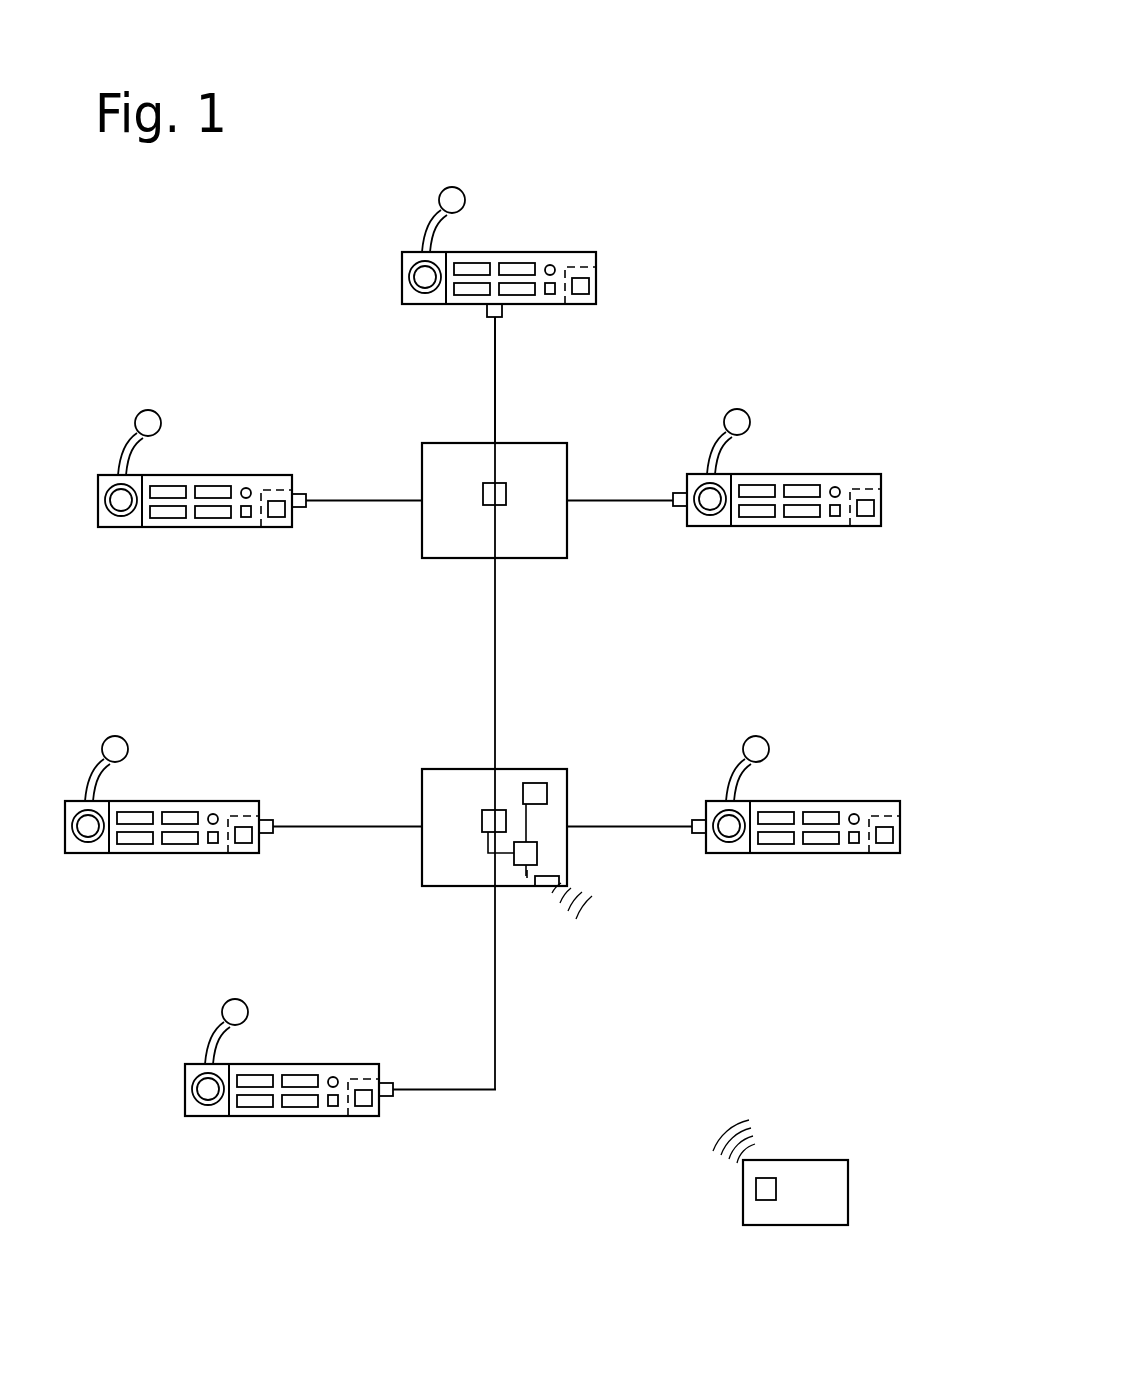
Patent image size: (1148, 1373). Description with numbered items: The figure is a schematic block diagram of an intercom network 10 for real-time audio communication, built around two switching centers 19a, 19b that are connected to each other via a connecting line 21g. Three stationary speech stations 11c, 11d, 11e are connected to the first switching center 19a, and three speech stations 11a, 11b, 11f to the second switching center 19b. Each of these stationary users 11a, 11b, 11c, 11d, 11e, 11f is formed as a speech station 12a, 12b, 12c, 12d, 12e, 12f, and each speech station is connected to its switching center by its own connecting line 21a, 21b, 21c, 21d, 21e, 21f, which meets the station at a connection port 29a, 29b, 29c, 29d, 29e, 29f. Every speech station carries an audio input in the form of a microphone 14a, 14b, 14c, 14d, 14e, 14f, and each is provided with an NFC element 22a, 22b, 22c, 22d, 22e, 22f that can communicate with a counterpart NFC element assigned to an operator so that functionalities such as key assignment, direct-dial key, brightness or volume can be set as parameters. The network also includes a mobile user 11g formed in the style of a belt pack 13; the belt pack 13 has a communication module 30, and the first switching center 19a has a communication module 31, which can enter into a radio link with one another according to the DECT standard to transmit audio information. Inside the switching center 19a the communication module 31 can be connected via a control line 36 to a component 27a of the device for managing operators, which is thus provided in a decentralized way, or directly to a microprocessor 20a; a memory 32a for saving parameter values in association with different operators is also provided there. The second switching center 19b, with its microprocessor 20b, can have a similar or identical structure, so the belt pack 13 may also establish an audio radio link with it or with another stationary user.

The intercom network 10 is at (799, 72).
The user 11a is at (496, 258).
The user 11b is at (820, 477).
The user 11c is at (815, 804).
The user 11d is at (277, 1077).
The user 11e is at (160, 804).
The user 11f is at (193, 478).
The mobile user 11g is at (790, 1208).
The speech station 12a is at (521, 251).
The speech station 12b is at (813, 461).
The speech station 12c is at (818, 791).
The speech station 12d is at (296, 1095).
The speech station 12e is at (187, 820).
The speech station 12f is at (213, 496).
The belt pack 13 is at (773, 1205).
The microphone 14a is at (430, 226).
The microphone 14b is at (718, 450).
The microphone 14c is at (740, 780).
The microphone 14d is at (205, 1050).
The microphone 14e is at (80, 782).
The microphone 14f is at (113, 457).
The switching center 19a is at (520, 785).
The switching center 19b is at (462, 462).
The microprocessor 20a is at (490, 818).
The microprocessor 20b is at (490, 500).
The connecting line 21a is at (497, 383).
The connecting line 21b is at (612, 495).
The connecting line 21c is at (608, 824).
The connecting line 21d is at (497, 1005).
The connecting line 21e is at (390, 824).
The connecting line 21f is at (390, 497).
The connecting line 21g is at (497, 633).
The NFC element 22a is at (588, 288).
The NFC element 22b is at (874, 508).
The NFC element 22c is at (893, 834).
The NFC element 22d is at (365, 1100).
The NFC element 22e is at (250, 838).
The NFC element 22f is at (276, 510).
The component of the device for managing operators 27a is at (530, 852).
The connection port 29a is at (487, 314).
The connection port 29b is at (680, 508).
The connection port 29c is at (700, 834).
The connection port 29d is at (386, 1082).
The connection port 29e is at (267, 819).
The connection port 29f is at (300, 493).
The communication module 30 is at (756, 1188).
The communication module 31 is at (551, 886).
The memory 32a is at (540, 795).
The control line 36 is at (527, 878).